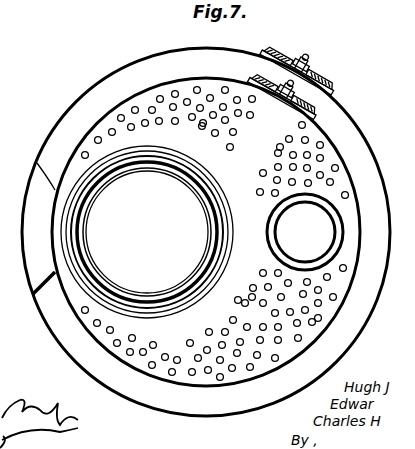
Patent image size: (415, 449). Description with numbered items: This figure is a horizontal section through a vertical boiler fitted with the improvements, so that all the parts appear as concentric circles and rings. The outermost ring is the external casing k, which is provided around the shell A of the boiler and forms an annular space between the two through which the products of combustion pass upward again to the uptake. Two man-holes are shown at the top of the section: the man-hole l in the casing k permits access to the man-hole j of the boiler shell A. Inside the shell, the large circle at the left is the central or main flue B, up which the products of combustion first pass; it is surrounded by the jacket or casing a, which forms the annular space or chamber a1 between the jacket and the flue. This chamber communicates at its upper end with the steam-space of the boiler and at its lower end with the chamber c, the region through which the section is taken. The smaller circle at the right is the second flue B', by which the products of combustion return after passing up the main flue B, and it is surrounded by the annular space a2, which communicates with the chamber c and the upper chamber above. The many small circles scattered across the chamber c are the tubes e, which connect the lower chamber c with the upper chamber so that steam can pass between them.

The shell of the boiler A is at (206, 232).
The tubes e is at (220, 242).
The external casing k is at (214, 256).
The man-hole l is at (301, 64).
The man-hole of the boiler j is at (285, 96).
The chamber c is at (215, 234).
The jacket or casing a is at (147, 232).
The annular space or chamber a1 is at (147, 232).
The central or main flue B is at (147, 232).
The annular space a2 is at (311, 232).
The second flue B' is at (305, 232).